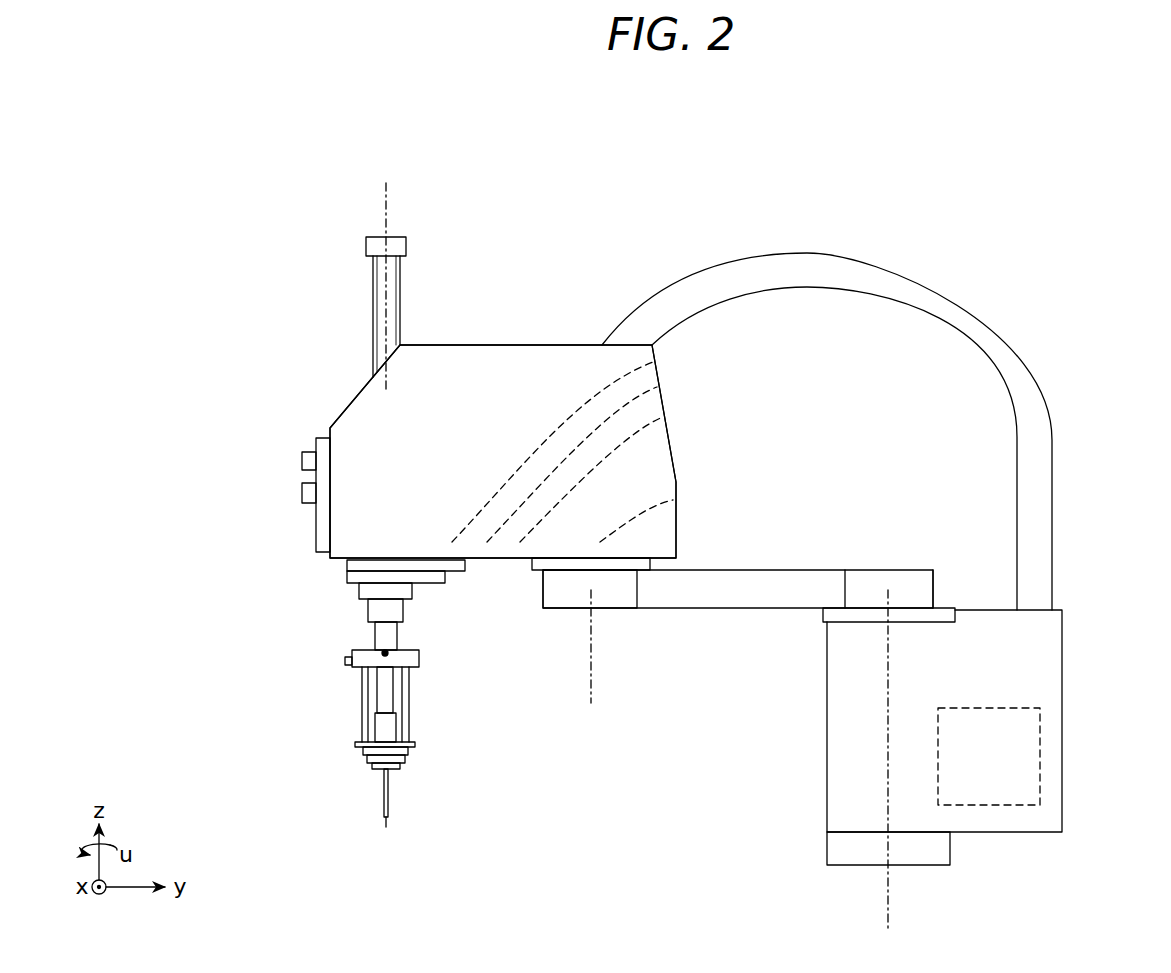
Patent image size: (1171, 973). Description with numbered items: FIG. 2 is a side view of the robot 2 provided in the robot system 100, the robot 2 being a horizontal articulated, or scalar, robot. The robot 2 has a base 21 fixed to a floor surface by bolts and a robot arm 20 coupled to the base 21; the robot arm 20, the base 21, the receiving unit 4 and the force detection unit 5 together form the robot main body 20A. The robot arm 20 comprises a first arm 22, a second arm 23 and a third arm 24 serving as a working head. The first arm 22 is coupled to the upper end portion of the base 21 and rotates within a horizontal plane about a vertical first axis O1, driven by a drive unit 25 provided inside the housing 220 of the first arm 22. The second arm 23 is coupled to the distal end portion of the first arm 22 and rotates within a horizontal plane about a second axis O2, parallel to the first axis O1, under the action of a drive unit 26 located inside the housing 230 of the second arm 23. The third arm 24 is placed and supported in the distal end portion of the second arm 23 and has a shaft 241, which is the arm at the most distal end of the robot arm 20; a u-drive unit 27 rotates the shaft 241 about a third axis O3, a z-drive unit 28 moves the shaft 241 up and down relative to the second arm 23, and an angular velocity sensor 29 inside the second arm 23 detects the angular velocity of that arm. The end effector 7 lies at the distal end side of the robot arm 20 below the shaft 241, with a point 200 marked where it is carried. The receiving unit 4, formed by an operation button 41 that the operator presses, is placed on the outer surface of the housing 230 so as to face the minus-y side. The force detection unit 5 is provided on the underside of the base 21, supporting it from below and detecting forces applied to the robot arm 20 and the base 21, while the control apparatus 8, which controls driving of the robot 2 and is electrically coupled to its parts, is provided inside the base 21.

The robot system 100 is at (988, 188).
The robot 2 is at (612, 226).
The robot arm 20 is at (750, 168).
The third axis O3 is at (393, 198).
The third arm 24 is at (373, 277).
The shaft 241 is at (373, 297).
The housing of the second arm 230 is at (492, 341).
The second arm 23 is at (445, 422).
The receiving unit 4 is at (317, 542).
The operation button 41 is at (302, 488).
The angular velocity sensor 29 is at (653, 362).
The z-drive unit 28 is at (657, 387).
The u-drive unit 27 is at (663, 417).
The drive unit 26 is at (673, 500).
The tool center point 200 is at (385, 652).
The end effector 7 is at (442, 662).
The first arm 22 is at (682, 583).
The robot main body 20A is at (657, 612).
The second axis O2 is at (591, 647).
The housing of the first arm 220 is at (813, 590).
The drive unit 25 is at (902, 590).
The base 21 is at (1032, 653).
The first axis O1 is at (888, 702).
The control apparatus 8 is at (1040, 758).
The force detection unit 5 is at (857, 846).